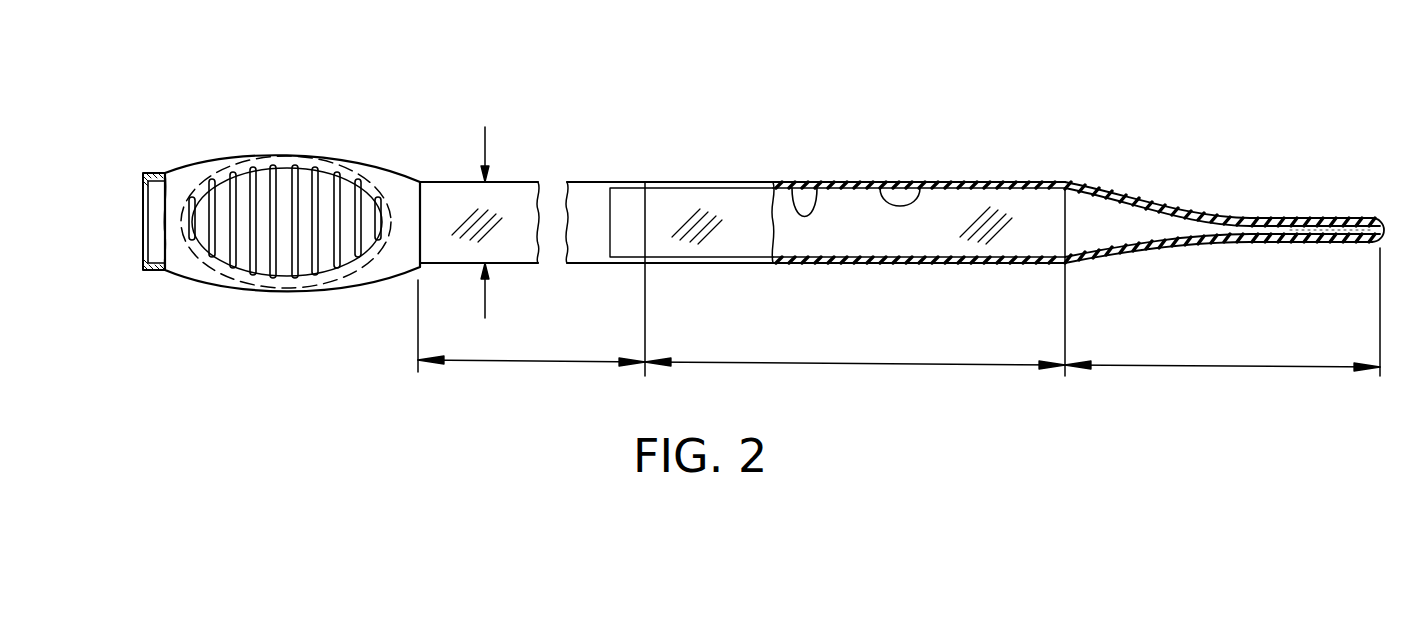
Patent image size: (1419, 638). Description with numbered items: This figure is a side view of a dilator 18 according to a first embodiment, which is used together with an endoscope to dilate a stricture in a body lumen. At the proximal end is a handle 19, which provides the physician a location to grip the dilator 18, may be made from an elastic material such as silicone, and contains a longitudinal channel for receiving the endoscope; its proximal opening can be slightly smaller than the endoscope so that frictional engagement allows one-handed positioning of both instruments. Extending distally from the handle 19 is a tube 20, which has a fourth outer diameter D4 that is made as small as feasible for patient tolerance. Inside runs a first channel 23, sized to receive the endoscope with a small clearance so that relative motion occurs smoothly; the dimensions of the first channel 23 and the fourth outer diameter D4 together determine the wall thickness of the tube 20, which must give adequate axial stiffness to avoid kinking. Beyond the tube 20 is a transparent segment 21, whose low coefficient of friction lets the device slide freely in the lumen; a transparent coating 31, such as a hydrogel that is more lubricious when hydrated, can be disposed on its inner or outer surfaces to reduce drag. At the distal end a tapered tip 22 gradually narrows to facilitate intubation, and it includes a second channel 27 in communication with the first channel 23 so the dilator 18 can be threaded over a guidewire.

The dilator 18 is at (1001, 103).
The handle 19 is at (201, 285).
The tube 20 is at (515, 362).
The transparent segment 21 is at (815, 364).
The tapered tip 22 is at (1205, 367).
The first channel 23 is at (792, 182).
The second channel 27 is at (1302, 226).
The coating 31 is at (925, 184).
The fourth outer diameter D4 is at (485, 138).